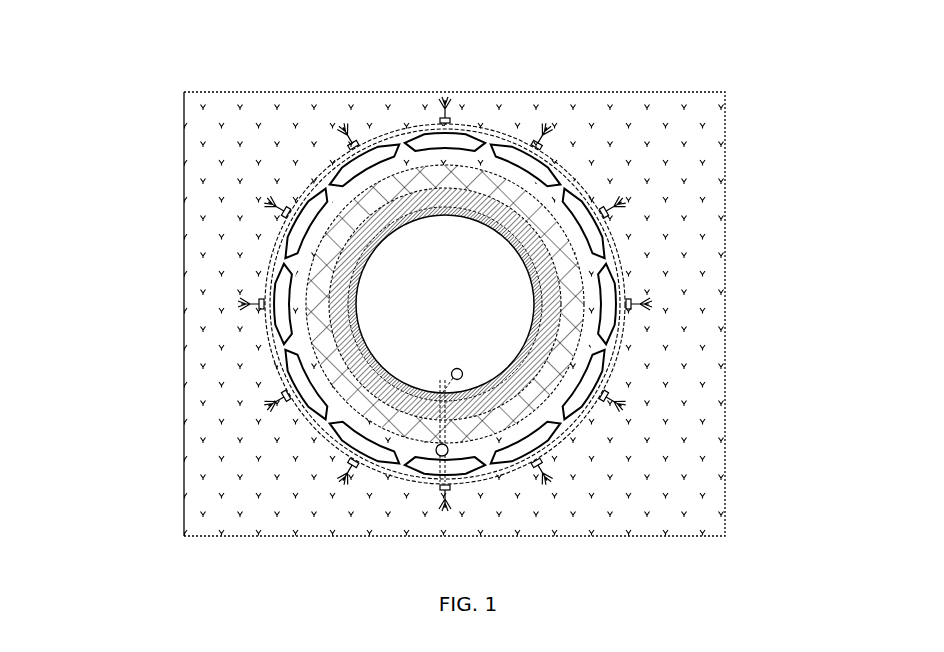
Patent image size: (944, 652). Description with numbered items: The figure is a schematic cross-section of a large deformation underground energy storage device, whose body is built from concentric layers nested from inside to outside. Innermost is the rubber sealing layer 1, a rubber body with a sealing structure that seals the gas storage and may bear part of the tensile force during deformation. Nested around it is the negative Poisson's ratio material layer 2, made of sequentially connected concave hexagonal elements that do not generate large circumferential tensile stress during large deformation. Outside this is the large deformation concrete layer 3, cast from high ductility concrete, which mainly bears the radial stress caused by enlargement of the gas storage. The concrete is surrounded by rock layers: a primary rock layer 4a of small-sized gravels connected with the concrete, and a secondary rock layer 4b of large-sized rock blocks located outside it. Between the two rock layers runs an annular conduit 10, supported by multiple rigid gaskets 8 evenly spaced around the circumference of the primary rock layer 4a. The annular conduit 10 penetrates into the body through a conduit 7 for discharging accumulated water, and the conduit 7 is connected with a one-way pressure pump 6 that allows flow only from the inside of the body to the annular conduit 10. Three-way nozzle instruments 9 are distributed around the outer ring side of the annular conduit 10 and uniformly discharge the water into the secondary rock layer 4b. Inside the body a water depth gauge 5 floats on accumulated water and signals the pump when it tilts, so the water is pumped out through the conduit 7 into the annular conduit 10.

The rubber sealing layer 1 is at (510, 238).
The negative Poisson's ratio material layer 2 is at (623, 212).
The large deformation concrete layer 3 is at (573, 357).
The primary rock layer 4a is at (591, 322).
The secondary rock layer 4b is at (690, 244).
The water depth gauge 5 is at (460, 380).
The one-way pressure pump 6 is at (436, 454).
The conduit 7 is at (439, 409).
The rigid gaskets 8 is at (280, 321).
The three-way nozzle instruments 9 is at (245, 295).
The annular conduit 10 is at (321, 174).